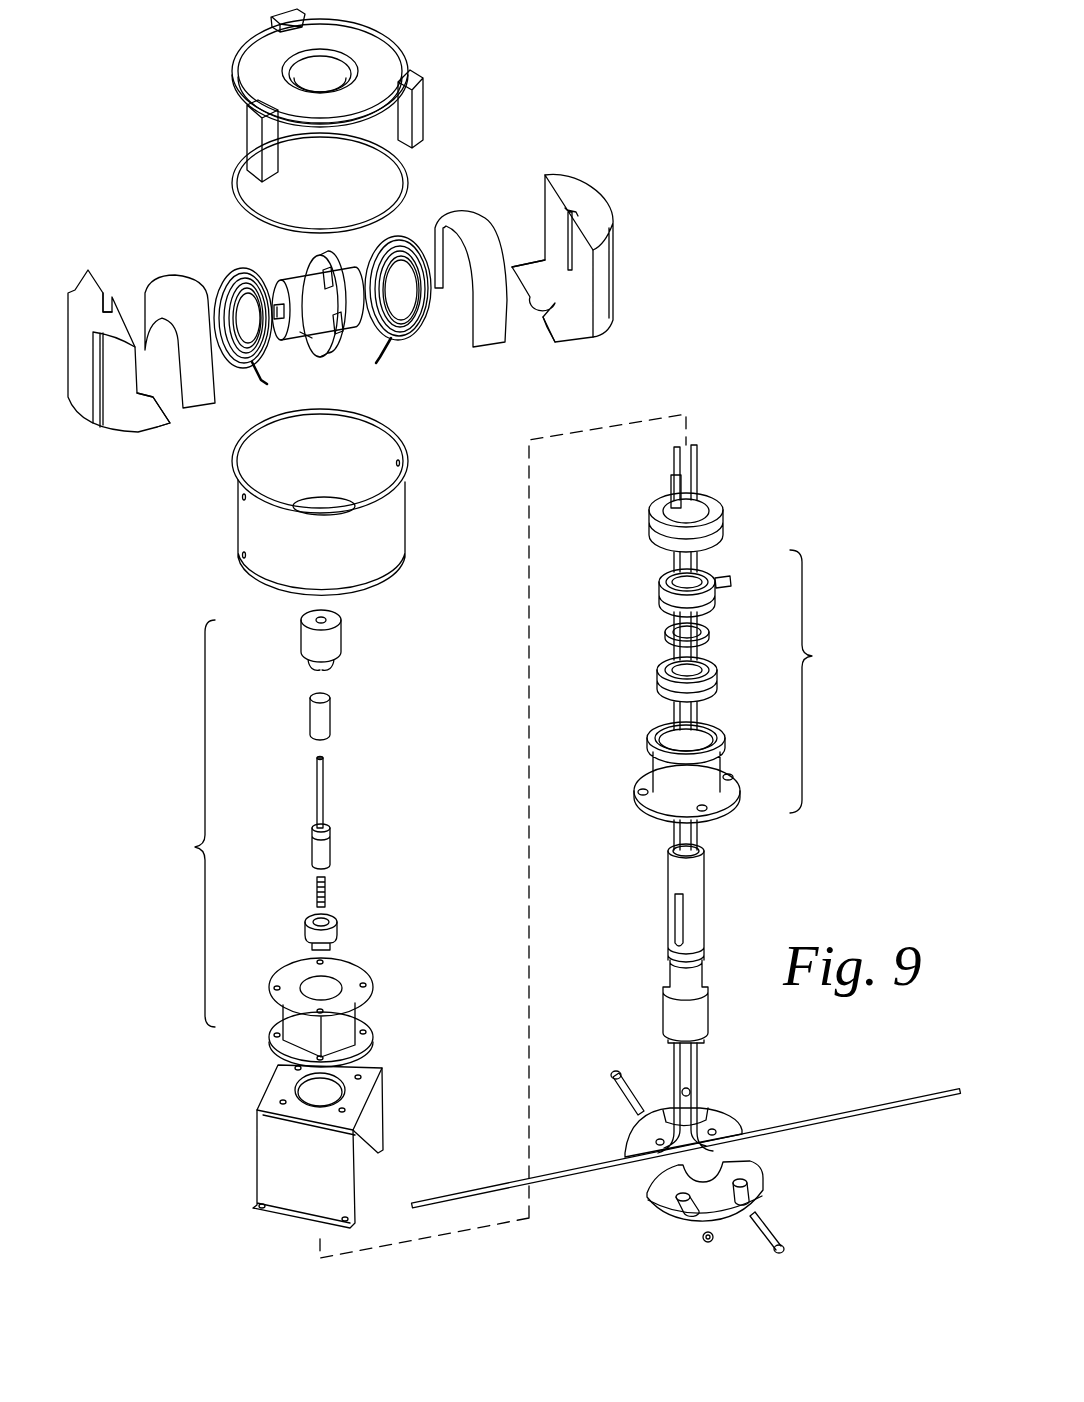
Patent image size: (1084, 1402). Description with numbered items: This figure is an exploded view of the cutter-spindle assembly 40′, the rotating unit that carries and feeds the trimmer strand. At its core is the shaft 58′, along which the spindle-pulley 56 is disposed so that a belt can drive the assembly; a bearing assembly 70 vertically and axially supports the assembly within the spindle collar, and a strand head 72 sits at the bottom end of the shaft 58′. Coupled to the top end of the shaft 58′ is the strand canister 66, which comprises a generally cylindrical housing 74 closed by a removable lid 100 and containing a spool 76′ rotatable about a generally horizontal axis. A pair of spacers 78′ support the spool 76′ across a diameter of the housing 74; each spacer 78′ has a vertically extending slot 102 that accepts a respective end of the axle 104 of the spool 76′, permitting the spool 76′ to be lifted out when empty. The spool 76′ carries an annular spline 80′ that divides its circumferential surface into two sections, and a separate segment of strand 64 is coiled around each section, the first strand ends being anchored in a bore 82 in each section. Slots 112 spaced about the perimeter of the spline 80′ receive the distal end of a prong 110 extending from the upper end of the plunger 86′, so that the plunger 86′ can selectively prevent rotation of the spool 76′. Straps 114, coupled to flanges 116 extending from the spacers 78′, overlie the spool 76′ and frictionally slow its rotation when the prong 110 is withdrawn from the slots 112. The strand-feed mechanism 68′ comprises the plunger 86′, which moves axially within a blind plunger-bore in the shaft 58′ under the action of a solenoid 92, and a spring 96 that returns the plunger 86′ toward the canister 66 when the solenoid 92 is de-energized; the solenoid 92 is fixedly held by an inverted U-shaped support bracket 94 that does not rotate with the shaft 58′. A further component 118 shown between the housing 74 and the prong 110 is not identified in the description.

The lid 100 is at (398, 43).
The spacers 78′ is at (85, 310).
The vertically extending slot 102 is at (105, 300).
The flanges 116 is at (155, 427).
The straps 114 is at (184, 282).
The strand 64 is at (246, 372).
The bore 82 is at (284, 280).
The axle 104 is at (278, 318).
The spline 80′ is at (322, 256).
The slots 112 is at (327, 270).
The spool 76′ is at (303, 338).
The cutter-spindle assembly 40′ is at (765, 320).
The housing 74 is at (405, 522).
The strand canister 66 is at (190, 527).
The strand-feed mechanism 68′ is at (242, 823).
The sleeve 118 is at (312, 720).
The prong 110 is at (326, 783).
The plunger 86′ is at (331, 845).
The spring 96 is at (328, 890).
The solenoid 92 is at (358, 1025).
The support bracket 94 is at (258, 1160).
The spindle-pulley 56 is at (725, 532).
The bearing assembly 70 is at (749, 647).
The shaft 58′ is at (668, 903).
The strand head 72 is at (735, 1120).